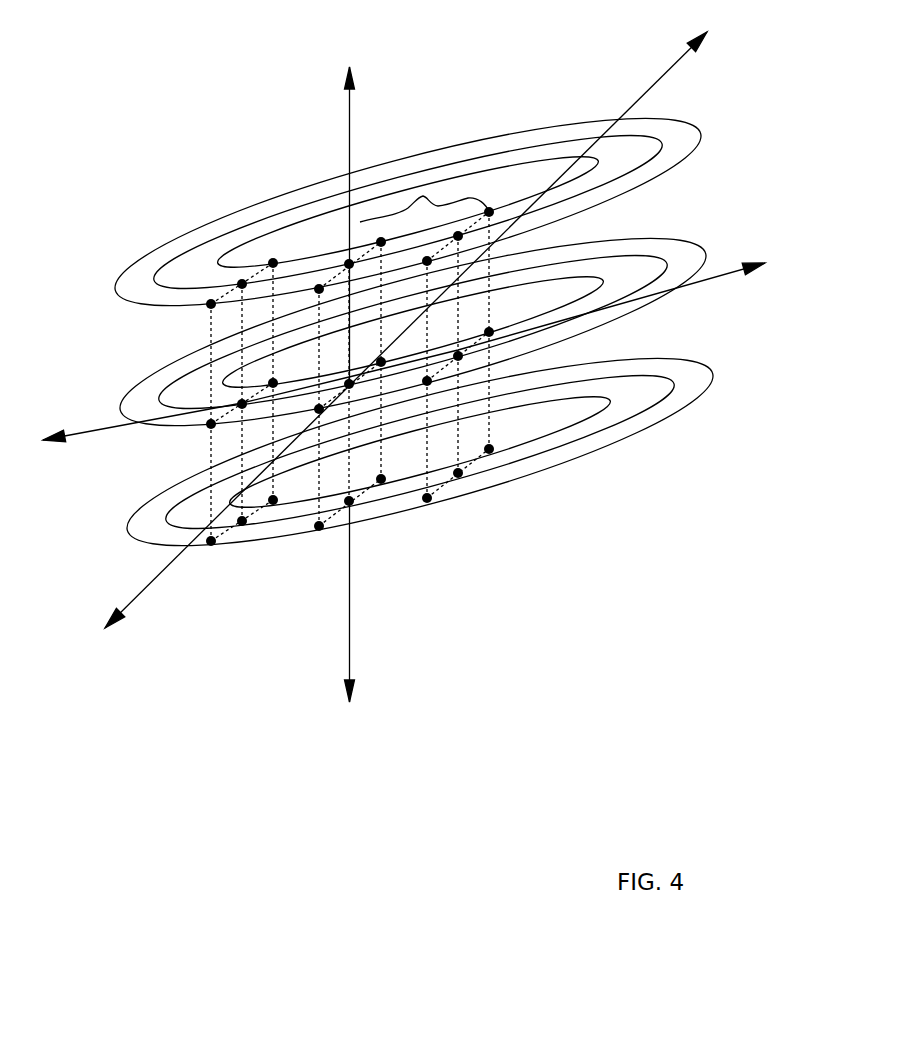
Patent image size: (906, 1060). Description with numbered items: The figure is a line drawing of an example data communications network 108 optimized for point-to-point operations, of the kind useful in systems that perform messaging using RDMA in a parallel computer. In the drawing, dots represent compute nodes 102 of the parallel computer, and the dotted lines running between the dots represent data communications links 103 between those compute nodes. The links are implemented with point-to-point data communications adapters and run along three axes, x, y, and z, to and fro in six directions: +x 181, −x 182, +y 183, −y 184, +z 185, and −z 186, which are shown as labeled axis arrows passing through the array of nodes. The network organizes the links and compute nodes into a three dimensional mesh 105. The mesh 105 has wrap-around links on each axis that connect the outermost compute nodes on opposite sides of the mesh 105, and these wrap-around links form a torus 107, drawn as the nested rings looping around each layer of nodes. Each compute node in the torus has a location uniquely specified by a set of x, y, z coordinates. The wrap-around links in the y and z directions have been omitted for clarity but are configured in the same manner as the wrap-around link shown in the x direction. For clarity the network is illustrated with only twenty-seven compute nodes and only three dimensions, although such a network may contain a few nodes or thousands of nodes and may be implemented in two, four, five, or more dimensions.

The compute nodes 102 is at (488, 450).
The data communications links 103 is at (211, 331).
The three dimensional mesh 105 is at (433, 191).
The torus 107 is at (200, 222).
The data communications network optimized for point-to-point operations 108 is at (310, 916).
The +x direction 181 is at (800, 294).
The -x direction 182 is at (42, 477).
The +y direction 183 is at (747, 57).
The -y direction 184 is at (100, 674).
The +z direction 185 is at (365, 57).
The -z direction 186 is at (367, 757).